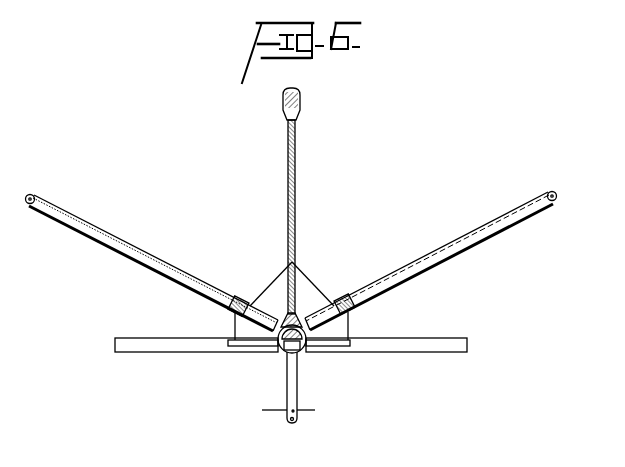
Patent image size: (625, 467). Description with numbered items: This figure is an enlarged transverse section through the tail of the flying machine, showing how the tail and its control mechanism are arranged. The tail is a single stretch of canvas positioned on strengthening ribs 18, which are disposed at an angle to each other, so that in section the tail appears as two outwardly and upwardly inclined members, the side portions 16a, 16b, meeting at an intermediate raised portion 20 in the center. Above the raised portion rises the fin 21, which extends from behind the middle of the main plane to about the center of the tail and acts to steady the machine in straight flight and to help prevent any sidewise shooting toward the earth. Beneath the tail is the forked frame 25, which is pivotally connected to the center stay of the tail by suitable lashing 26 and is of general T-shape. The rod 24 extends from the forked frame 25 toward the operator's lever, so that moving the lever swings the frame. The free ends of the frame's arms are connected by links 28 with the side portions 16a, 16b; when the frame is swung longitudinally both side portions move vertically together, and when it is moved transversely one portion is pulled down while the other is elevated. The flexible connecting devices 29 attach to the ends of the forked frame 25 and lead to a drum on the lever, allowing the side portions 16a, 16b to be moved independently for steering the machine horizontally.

The side portion of the tail 16a is at (153, 263).
The side portion of the tail 16b is at (446, 246).
The strengthening ribs 18 is at (28, 204).
The intermediate raised portion 20 is at (300, 290).
The fin 21 is at (295, 172).
The rod 24 is at (291, 423).
The forked frame 25 is at (287, 372).
The lashing 26 is at (302, 352).
The links 28 is at (228, 325).
The flexible connecting devices 29 is at (268, 410).